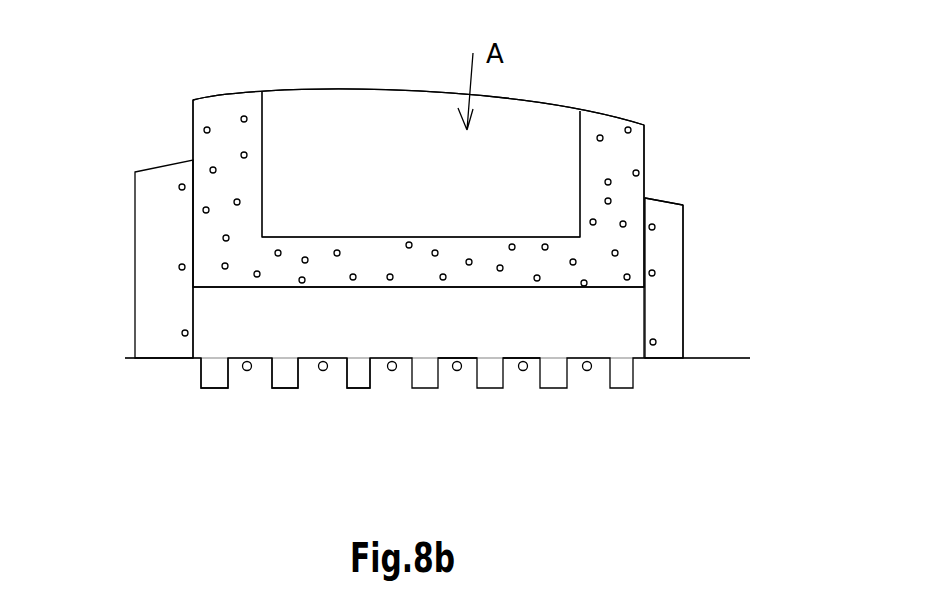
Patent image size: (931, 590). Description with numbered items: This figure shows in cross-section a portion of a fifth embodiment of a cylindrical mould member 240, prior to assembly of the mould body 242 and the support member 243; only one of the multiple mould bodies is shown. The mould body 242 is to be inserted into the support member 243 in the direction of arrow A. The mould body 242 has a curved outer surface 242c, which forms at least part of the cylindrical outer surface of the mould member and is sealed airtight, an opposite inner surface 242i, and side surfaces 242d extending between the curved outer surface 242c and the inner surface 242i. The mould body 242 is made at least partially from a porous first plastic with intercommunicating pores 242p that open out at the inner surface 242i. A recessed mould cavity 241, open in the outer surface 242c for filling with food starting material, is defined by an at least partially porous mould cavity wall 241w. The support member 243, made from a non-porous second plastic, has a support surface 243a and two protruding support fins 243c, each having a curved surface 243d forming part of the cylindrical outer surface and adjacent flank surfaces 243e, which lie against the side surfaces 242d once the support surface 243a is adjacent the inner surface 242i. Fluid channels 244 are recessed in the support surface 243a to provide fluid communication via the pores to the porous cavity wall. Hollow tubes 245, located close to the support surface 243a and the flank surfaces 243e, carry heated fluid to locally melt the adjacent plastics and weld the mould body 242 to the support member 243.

The mould member 240 is at (75, 362).
The mould cavity 241 is at (421, 164).
The mould cavity wall 241w is at (578, 222).
The mould body 242 is at (610, 130).
The curved outer surface 242c is at (222, 95).
The side surfaces 242d is at (192, 139).
The inner surface 242i is at (270, 288).
The pores 242p is at (241, 202).
The support member 243 is at (437, 414).
The support surface 243a is at (508, 358).
The support fins 243c is at (150, 226).
The curved surface 243d is at (670, 205).
The flank surfaces 243e is at (645, 318).
The fluid channels 244 is at (358, 372).
The hollow tubes 245 is at (182, 332).